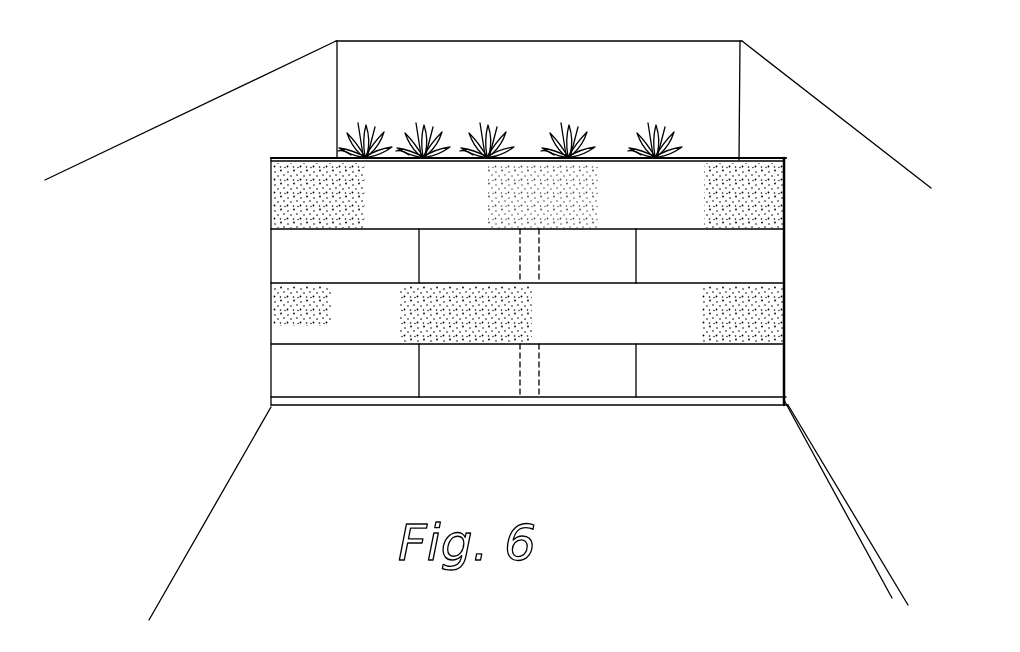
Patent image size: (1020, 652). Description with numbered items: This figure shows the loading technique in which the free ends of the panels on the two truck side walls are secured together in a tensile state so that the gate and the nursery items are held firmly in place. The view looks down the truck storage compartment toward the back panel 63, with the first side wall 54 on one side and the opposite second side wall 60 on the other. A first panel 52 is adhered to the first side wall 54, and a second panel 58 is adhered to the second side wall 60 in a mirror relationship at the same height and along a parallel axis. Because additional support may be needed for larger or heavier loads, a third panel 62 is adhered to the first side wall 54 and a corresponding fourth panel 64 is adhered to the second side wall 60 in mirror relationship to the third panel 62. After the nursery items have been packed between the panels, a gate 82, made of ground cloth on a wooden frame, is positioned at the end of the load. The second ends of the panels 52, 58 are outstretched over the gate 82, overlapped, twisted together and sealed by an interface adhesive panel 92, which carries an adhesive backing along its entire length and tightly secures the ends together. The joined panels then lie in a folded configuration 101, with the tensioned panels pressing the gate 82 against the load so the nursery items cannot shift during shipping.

The first panel 52 is at (695, 262).
The first side wall 54 is at (830, 132).
The second panel 58 is at (368, 263).
The second side wall 60 is at (212, 124).
The third panel 62 is at (663, 373).
The back panel 63 is at (545, 60).
The fourth panel 64 is at (405, 378).
The gate 82 is at (388, 300).
The interface adhesive panel 92 is at (585, 258).
The folded configuration 101 is at (521, 254).